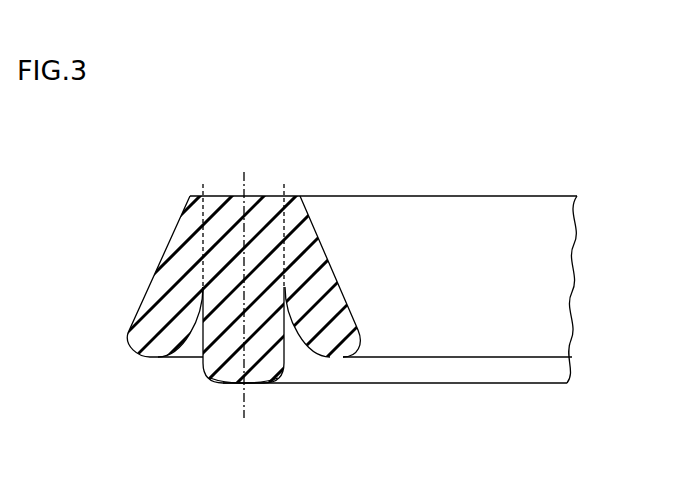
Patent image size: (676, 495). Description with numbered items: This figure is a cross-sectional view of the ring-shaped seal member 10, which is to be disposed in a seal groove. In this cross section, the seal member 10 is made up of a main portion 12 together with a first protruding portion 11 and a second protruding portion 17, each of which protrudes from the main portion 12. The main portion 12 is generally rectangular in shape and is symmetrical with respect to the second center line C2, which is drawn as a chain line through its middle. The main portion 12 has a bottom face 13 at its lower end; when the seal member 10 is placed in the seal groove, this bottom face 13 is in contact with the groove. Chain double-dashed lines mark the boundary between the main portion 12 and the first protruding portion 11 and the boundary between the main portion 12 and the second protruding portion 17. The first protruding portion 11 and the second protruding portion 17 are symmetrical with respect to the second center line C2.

The seal member 10 is at (423, 161).
The first protruding portion 11 is at (357, 336).
The main portion 12 is at (219, 382).
The bottom face 13 is at (243, 384).
The second protruding portion 17 is at (128, 336).
The second center line C2 is at (247, 405).